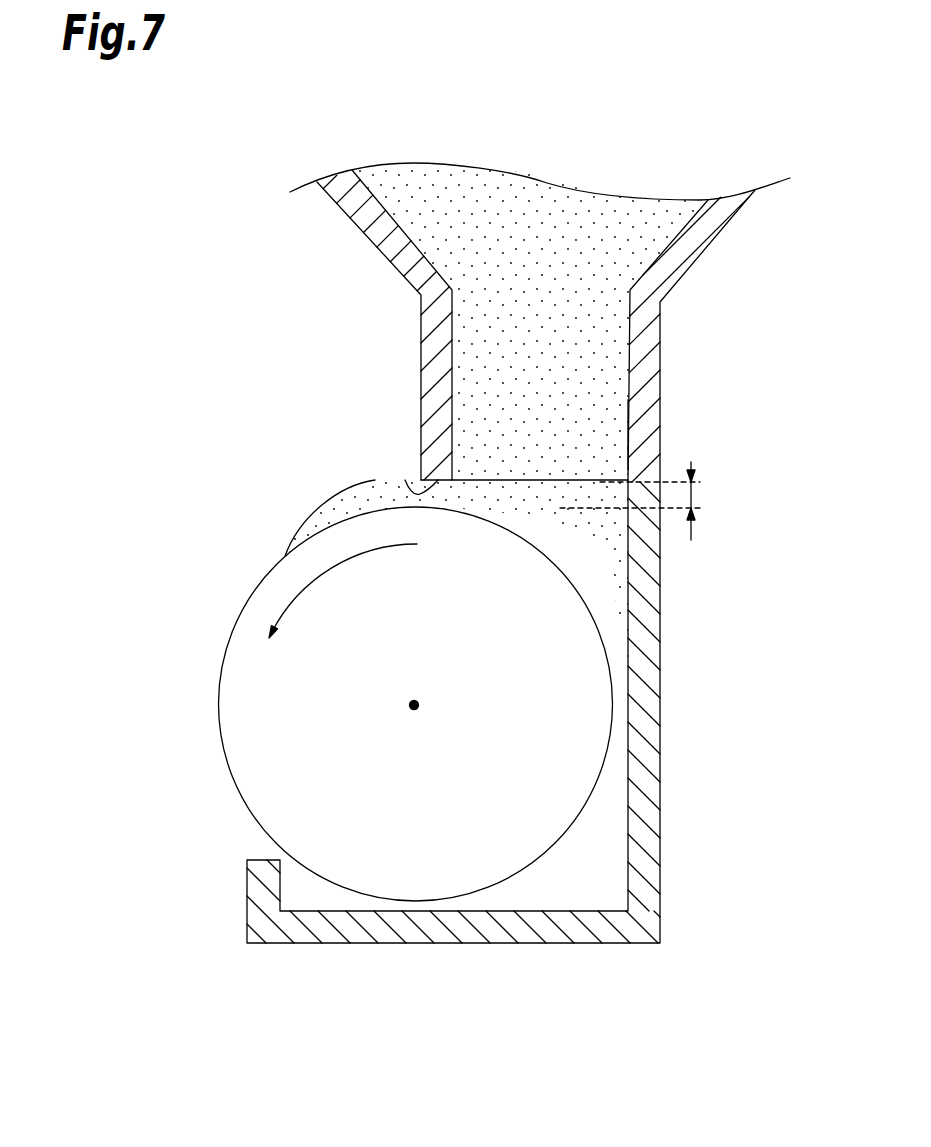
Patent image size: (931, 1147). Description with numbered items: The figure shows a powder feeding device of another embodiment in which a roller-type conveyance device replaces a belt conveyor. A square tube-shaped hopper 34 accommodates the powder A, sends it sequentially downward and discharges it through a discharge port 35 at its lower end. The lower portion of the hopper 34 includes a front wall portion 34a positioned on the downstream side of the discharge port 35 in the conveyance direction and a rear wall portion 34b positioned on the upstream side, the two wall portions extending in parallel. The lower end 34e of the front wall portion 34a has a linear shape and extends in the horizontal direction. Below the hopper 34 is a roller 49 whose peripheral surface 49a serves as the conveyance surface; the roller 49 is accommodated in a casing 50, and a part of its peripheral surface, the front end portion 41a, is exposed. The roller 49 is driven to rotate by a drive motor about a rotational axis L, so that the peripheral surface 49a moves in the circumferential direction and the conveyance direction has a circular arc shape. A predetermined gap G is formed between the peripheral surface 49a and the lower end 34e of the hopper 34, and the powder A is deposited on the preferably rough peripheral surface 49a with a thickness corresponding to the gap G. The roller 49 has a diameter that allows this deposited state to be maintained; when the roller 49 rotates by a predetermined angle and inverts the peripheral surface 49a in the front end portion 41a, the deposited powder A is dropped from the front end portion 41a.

The powder A is at (540, 227).
The hopper 34 is at (718, 250).
The front wall portion 34a is at (425, 437).
The rear wall portion 34b is at (655, 443).
The lower end of the front wall portion 34e is at (415, 490).
The discharge port 35 is at (633, 440).
The peripheral surface 49a is at (348, 518).
The roller 49 is at (565, 572).
The front end portion 41a is at (224, 618).
The rotational axis L is at (418, 703).
The gap G is at (694, 496).
The casing 50 is at (659, 732).